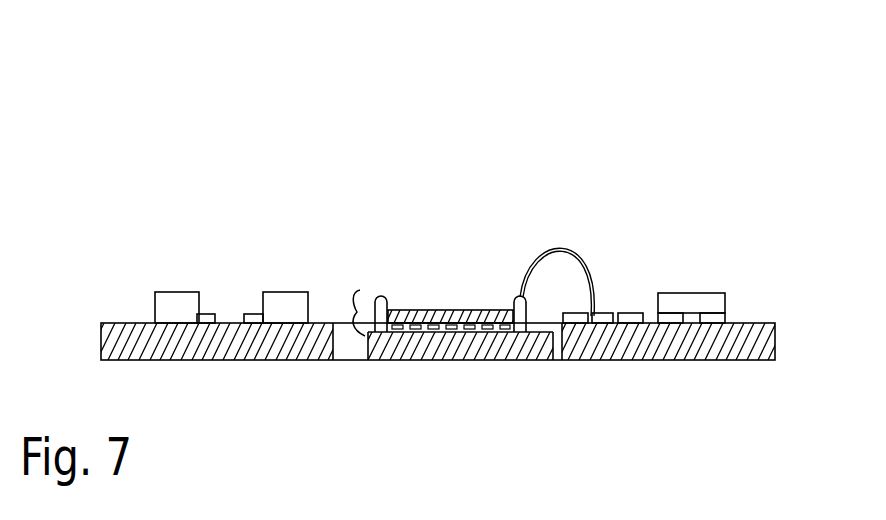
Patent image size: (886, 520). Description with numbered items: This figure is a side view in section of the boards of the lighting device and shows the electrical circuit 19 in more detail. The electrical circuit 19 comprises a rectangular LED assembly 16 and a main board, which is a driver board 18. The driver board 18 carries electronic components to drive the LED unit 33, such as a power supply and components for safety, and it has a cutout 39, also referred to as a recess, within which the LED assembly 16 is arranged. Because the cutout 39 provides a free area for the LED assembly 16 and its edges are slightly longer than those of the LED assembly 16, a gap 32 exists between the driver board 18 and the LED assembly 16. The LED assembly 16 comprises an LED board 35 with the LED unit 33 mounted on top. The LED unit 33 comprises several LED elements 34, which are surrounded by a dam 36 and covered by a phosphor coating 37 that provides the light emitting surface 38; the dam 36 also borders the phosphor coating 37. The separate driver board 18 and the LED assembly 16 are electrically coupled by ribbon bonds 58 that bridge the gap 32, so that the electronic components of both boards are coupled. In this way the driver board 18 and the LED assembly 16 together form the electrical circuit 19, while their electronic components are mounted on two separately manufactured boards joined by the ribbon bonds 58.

The electrical circuit 19 is at (737, 118).
The driver board 18 is at (120, 300).
The LED assembly 16 is at (443, 277).
The LED unit 33 is at (341, 307).
The phosphor coating 37 is at (408, 309).
The light emitting surface 38 is at (452, 307).
The dam 36 is at (522, 302).
The ribbon bonds 58 is at (558, 250).
The LED board 35 is at (415, 350).
The LED elements 34 is at (488, 328).
The gap 32 is at (557, 362).
The cutout 39 is at (348, 415).